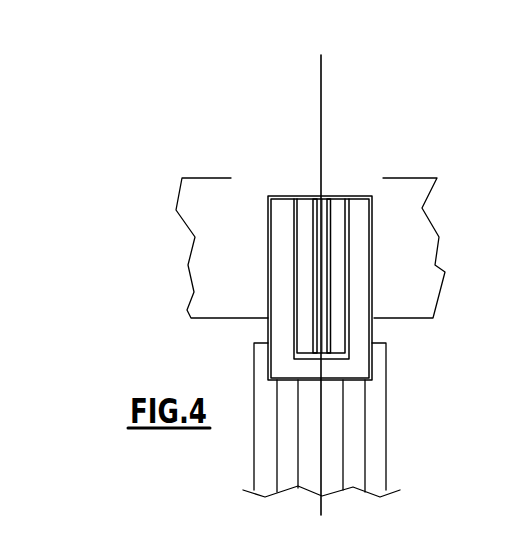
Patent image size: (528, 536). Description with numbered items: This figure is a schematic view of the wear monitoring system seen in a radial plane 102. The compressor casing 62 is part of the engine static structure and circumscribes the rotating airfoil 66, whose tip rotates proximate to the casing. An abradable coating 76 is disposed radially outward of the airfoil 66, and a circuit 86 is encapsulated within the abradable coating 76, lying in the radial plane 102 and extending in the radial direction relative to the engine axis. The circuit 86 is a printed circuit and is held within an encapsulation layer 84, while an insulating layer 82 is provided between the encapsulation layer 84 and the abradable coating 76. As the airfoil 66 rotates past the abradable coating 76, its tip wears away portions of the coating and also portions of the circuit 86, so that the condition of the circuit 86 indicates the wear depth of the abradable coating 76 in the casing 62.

The compressor casing 62 is at (418, 272).
The rotating airfoil 66 is at (268, 450).
The abradable coating 76 is at (358, 262).
The insulating layer 82 is at (301, 212).
The encapsulation layer 84 is at (307, 190).
The circuit 86 is at (330, 192).
The radial plane 102 is at (321, 83).